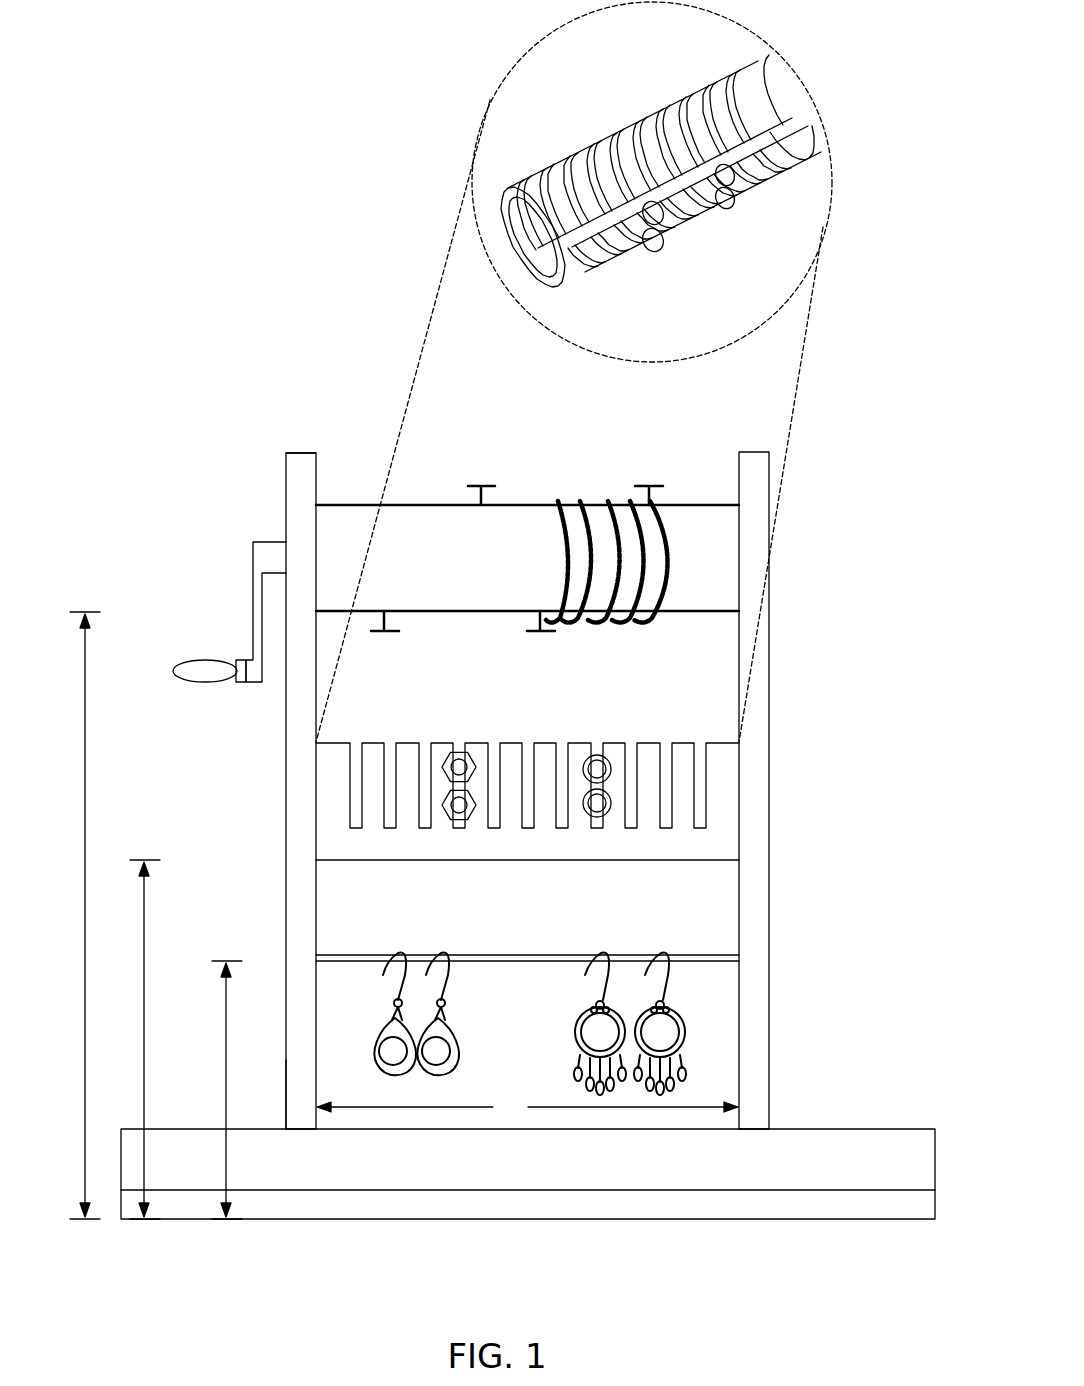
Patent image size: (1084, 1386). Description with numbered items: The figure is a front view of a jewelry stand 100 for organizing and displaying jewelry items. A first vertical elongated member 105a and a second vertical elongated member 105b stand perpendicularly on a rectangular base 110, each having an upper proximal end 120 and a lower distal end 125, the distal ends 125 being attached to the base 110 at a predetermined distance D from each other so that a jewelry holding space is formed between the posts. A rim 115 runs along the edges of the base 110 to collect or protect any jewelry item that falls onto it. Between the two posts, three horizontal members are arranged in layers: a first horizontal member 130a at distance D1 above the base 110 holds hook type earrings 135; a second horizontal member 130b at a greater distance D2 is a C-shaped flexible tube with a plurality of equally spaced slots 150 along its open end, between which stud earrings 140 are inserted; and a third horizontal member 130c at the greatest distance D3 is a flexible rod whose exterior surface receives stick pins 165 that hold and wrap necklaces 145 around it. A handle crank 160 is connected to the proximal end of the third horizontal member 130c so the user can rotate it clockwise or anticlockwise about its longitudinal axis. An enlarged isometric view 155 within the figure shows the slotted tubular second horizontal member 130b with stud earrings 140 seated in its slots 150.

The jewelry stand 100 is at (197, 302).
The first vertical elongated member 105a is at (286, 487).
The second vertical elongated member 105b is at (739, 480).
The base 110 is at (830, 1205).
The rim 115 is at (356, 1168).
The proximal end 120 is at (300, 453).
The distal end 125 is at (287, 1110).
The first horizontal member 130a is at (726, 953).
The second horizontal member 130b is at (586, 767).
The third horizontal member 130c is at (527, 543).
The hook type earrings 135 is at (574, 1037).
The stud earrings 140 is at (459, 753).
The necklaces 145 is at (556, 505).
The slots 150 is at (390, 755).
The isometric view of the second horizontal member 155 is at (495, 92).
The handle crank 160 is at (197, 660).
The stick pins 165 is at (650, 484).